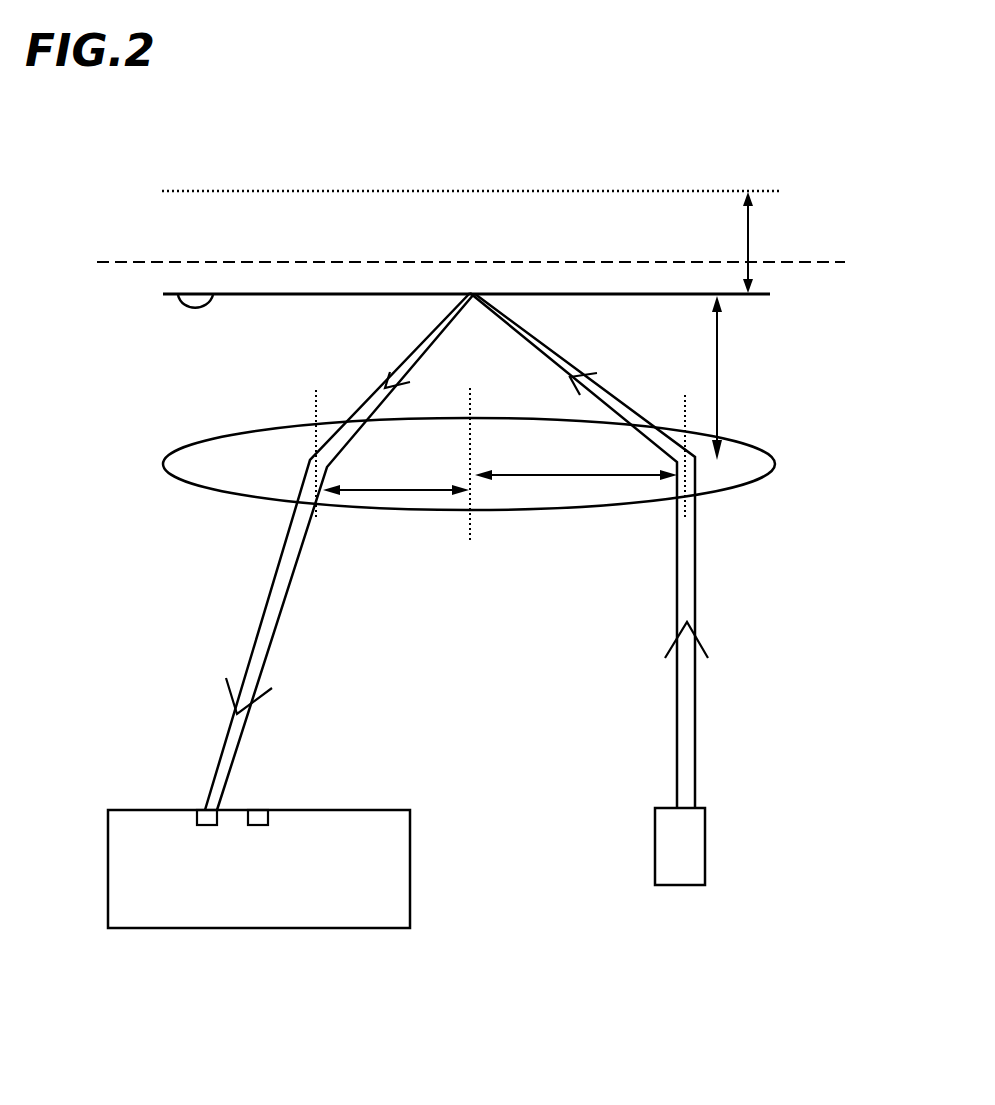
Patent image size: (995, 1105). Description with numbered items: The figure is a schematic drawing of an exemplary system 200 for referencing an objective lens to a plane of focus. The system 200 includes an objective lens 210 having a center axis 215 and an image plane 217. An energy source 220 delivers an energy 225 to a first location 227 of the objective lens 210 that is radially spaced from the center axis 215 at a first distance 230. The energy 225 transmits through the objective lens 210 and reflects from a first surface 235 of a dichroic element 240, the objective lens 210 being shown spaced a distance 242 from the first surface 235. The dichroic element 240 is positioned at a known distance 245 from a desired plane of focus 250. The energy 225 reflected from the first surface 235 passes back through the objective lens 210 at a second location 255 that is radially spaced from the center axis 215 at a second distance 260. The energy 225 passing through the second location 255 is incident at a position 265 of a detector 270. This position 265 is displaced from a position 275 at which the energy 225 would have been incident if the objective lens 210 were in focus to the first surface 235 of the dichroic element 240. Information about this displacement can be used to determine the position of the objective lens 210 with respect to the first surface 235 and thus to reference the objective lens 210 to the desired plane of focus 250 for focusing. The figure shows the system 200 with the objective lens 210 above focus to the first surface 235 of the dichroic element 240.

The system 200 is at (652, 122).
The objective lens 210 is at (762, 462).
The center axis 215 is at (472, 528).
The image plane 217 is at (133, 263).
The energy source 220 is at (683, 855).
The energy 225 is at (687, 752).
The first location 227 is at (685, 395).
The first distance 230 is at (578, 476).
The first surface 235 is at (213, 295).
The dichroic element 240 is at (768, 294).
The distance 242 is at (717, 372).
The known distance 245 is at (748, 243).
The desired plane of focus 250 is at (780, 191).
The second location 255 is at (316, 392).
The second distance 260 is at (388, 491).
The position 265 is at (205, 810).
The detector 270 is at (393, 862).
The position 275 is at (257, 810).